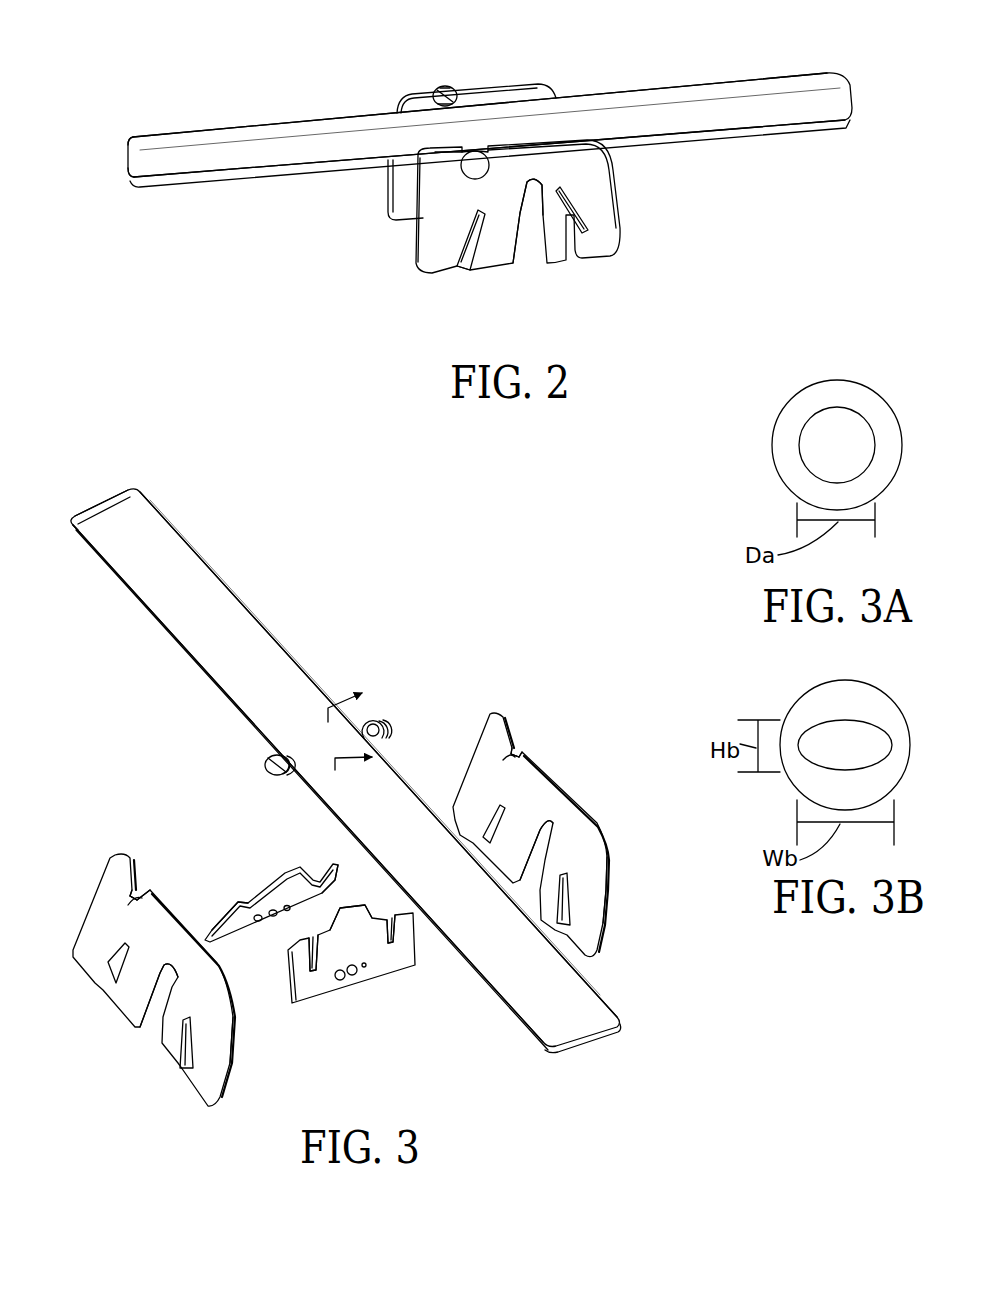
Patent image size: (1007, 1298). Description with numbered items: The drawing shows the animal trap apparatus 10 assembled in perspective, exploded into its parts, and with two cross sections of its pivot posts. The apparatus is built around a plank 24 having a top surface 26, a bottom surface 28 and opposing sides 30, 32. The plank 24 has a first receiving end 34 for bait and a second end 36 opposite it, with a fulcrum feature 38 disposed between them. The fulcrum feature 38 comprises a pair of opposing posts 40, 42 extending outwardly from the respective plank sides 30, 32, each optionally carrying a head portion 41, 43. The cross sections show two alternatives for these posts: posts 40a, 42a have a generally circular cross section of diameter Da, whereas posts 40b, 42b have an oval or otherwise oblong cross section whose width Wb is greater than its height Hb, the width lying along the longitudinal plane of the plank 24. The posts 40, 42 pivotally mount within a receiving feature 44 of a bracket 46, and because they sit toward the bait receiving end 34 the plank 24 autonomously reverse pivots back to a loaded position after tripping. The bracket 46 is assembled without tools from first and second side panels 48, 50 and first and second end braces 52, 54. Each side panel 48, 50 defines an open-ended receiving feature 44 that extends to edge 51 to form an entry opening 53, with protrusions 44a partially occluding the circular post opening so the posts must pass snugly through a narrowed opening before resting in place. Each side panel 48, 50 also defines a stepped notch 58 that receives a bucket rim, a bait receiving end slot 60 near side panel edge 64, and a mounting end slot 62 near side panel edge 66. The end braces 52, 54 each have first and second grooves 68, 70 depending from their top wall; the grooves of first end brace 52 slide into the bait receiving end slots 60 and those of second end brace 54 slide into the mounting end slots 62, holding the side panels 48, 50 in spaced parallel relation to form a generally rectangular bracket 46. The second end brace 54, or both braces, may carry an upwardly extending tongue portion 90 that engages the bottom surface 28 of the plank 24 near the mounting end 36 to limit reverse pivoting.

In FIG. 2, the animal trap apparatus 10 is at (476, 156).
In FIG. 3, the animal trap apparatus 10 is at (355, 782).
In FIG. 2, the plank 24 is at (476, 129).
In FIG. 3, the plank 24 is at (346, 764).
In FIG. 2, the top surface 26 is at (785, 76).
In FIG. 3, the top surface 26 is at (236, 606).
In FIG. 2, the bottom surface 28 is at (698, 133).
In FIG. 3, the bottom surface 28 is at (136, 610).
In FIG. 2, the side 30 is at (286, 186).
In FIG. 3, the side 30 is at (185, 648).
In FIG. 2, the side 32 is at (304, 121).
In FIG. 3, the side 32 is at (291, 655).
In FIG. 2, the first receiving end 34 is at (134, 150).
In FIG. 3, the first receiving end 34 is at (103, 489).
In FIG. 3, the second end 36 is at (585, 1046).
In FIG. 2, the fulcrum feature 38 is at (450, 91).
In FIG. 3, the fulcrum feature 38 is at (250, 772).
In FIG. 3, the post 40 is at (267, 755).
In FIG. 3A, the post 40a is at (822, 408).
In FIG. 3B, the post 40b is at (881, 710).
In FIG. 3, the head portion 41 is at (281, 781).
In FIG. 3A, the head portion 41 is at (788, 445).
In FIG. 3B, the head portion 41 is at (820, 725).
In FIG. 3, the post 42 is at (398, 708).
In FIG. 3A, the post 42a is at (835, 410).
In FIG. 3B, the post 42b is at (873, 725).
In FIG. 3, the head portion 43 is at (388, 732).
In FIG. 3A, the head portion 43 is at (775, 425).
In FIG. 3B, the head portion 43 is at (803, 695).
In FIG. 2, the receiving feature 44 is at (434, 96).
In FIG. 3, the receiving feature 44 is at (511, 758).
In FIG. 3, the protrusion 44a is at (522, 750).
In FIG. 2, the bracket 46 is at (455, 166).
In FIG. 2, the first side panel 48 is at (542, 221).
In FIG. 3, the first side panel 48 is at (76, 922).
In FIG. 3, the second side panel 50 is at (601, 808).
In FIG. 3, the edge 51 is at (581, 800).
In FIG. 3, the first end brace 52 is at (267, 898).
In FIG. 3, the entry opening 53 is at (515, 736).
In FIG. 2, the second end brace 54 is at (607, 228).
In FIG. 3, the second end brace 54 is at (351, 927).
In FIG. 2, the notch 58 is at (548, 262).
In FIG. 3, the notch 58 is at (552, 822).
In FIG. 3, the bait receiving end slot 60 is at (483, 835).
In FIG. 2, the mounting end slot 62 is at (471, 240).
In FIG. 3, the mounting end slot 62 is at (571, 921).
In FIG. 3, the side panel edge 64 is at (474, 748).
In FIG. 3, the side panel edge 66 is at (610, 880).
In FIG. 3, the first groove 68 is at (238, 902).
In FIG. 3, the second groove 70 is at (317, 874).
In FIG. 3, the tongue portion 90 is at (343, 907).